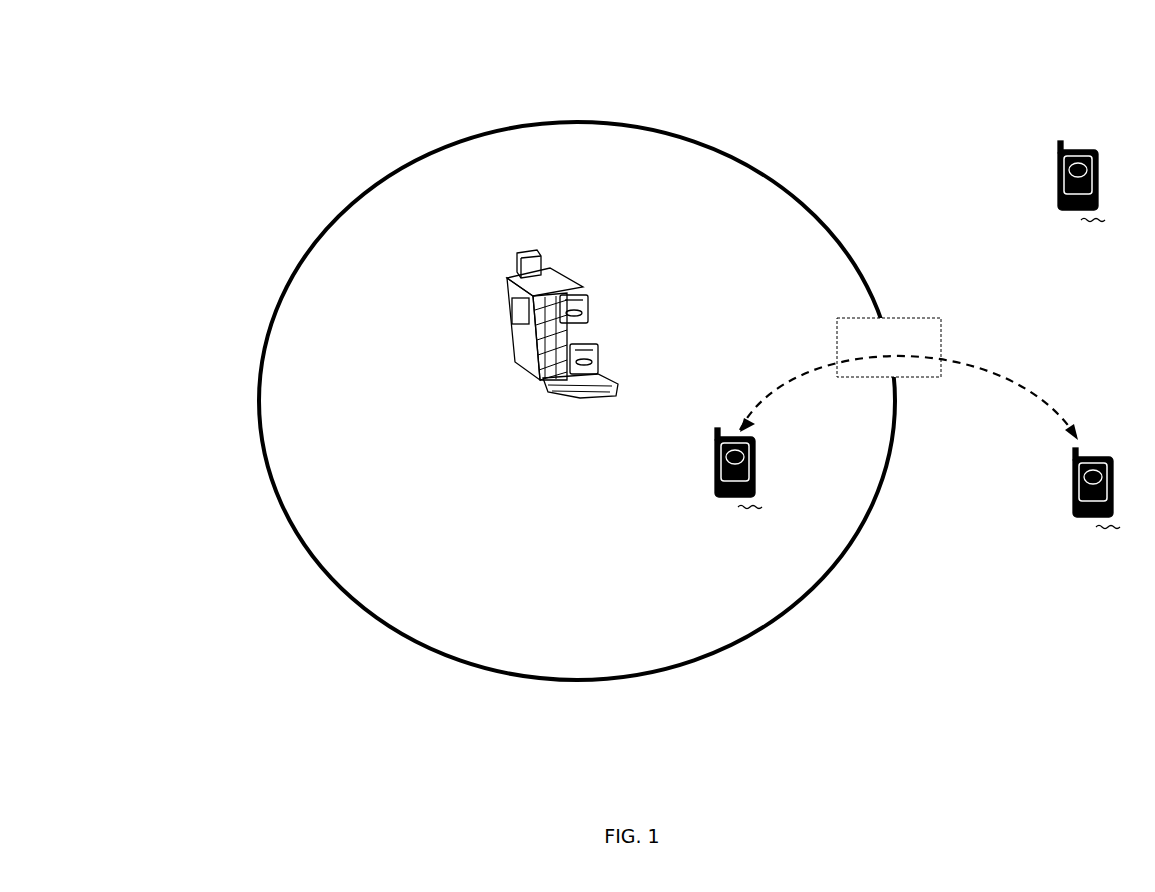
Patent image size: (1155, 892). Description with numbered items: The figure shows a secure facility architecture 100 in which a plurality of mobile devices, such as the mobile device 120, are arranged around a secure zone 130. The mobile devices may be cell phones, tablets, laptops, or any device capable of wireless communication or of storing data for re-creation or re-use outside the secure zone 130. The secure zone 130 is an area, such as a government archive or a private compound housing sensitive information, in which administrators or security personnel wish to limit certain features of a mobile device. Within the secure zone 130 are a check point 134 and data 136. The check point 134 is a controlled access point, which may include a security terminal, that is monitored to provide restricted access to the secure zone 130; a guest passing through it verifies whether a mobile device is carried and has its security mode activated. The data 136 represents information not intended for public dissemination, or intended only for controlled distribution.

The secure facility architecture 100 is at (126, 68).
The mobile device 120 is at (1083, 152).
The secure zone 130 is at (552, 624).
The check point 134 is at (907, 318).
The data 136 is at (545, 268).